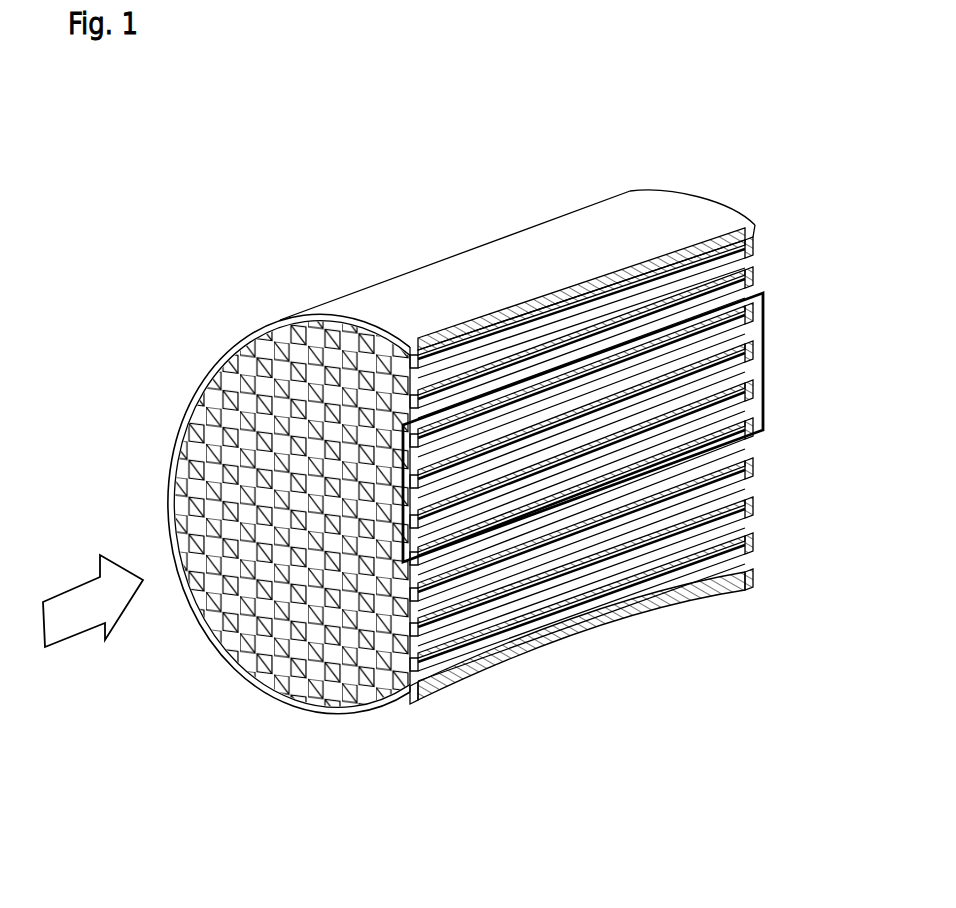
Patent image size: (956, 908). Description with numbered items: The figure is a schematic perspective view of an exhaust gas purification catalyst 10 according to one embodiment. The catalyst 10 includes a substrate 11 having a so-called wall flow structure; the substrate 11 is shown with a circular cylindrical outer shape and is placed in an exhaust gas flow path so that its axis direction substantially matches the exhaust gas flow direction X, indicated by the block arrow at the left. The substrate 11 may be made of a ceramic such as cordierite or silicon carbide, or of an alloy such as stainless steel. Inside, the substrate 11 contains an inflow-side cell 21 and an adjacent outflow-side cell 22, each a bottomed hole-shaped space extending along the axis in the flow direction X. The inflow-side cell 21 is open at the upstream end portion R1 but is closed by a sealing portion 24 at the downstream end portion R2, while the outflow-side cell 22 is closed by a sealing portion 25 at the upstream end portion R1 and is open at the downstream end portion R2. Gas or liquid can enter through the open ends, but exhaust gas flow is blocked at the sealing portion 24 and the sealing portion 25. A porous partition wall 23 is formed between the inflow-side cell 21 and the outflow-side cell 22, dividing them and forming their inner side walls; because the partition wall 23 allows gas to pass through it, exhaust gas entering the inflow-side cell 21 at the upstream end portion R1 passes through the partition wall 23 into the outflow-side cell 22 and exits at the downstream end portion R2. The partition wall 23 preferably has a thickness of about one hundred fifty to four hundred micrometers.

The exhaust gas purification catalyst 10 is at (585, 130).
The substrate 11 is at (477, 276).
The inflow-side cell 21 is at (513, 635).
The outflow-side cell 22 is at (632, 600).
The partition wall 23 is at (700, 543).
The sealing portion 24 is at (760, 545).
The sealing portion 25 is at (415, 695).
The upstream end portion R1 is at (250, 378).
The downstream end portion R2 is at (753, 258).
The exhaust gas flow direction X is at (77, 612).